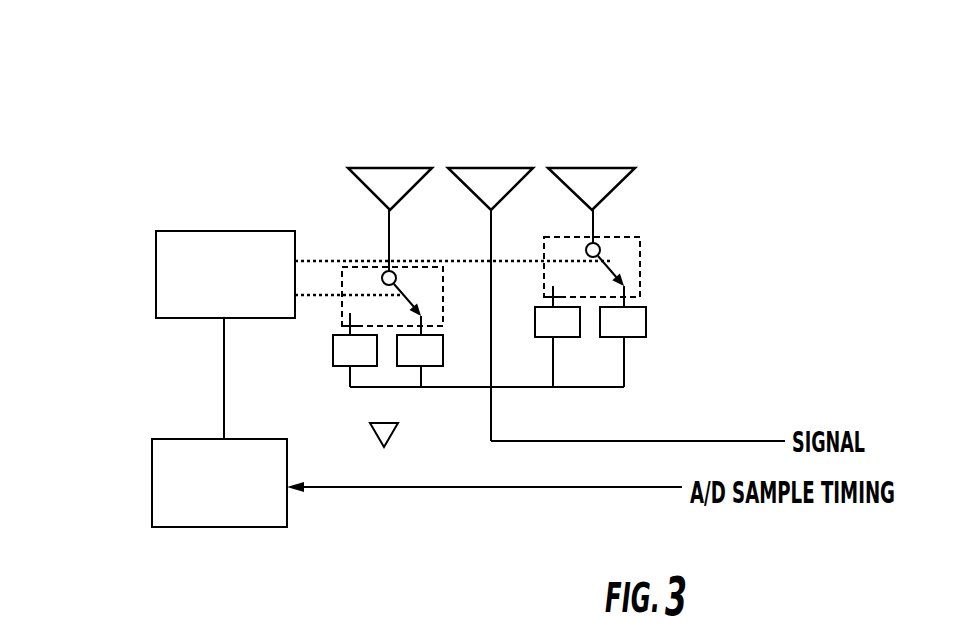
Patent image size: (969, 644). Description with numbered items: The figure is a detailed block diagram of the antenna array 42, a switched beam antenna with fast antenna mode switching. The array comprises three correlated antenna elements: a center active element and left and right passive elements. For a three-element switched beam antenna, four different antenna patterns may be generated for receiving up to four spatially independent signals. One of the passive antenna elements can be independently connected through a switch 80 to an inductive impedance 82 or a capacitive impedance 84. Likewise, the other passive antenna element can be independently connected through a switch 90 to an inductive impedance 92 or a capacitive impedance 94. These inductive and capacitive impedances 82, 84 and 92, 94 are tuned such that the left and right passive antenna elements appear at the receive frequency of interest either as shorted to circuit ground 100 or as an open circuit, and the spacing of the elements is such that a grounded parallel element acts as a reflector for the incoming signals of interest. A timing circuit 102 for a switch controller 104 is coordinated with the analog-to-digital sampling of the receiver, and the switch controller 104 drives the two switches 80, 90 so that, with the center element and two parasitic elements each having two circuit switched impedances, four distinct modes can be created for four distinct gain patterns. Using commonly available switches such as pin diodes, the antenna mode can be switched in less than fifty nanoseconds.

The antenna array 42 is at (481, 76).
The switch 80 is at (350, 267).
The inductive impedance 82 is at (333, 364).
The capacitive impedance 84 is at (436, 367).
The switch 90 is at (640, 248).
The inductive impedance 92 is at (545, 338).
The capacitive impedance 94 is at (646, 330).
The circuit ground 100 is at (372, 432).
The timing circuit 102 is at (232, 527).
The switch controller 104 is at (156, 294).